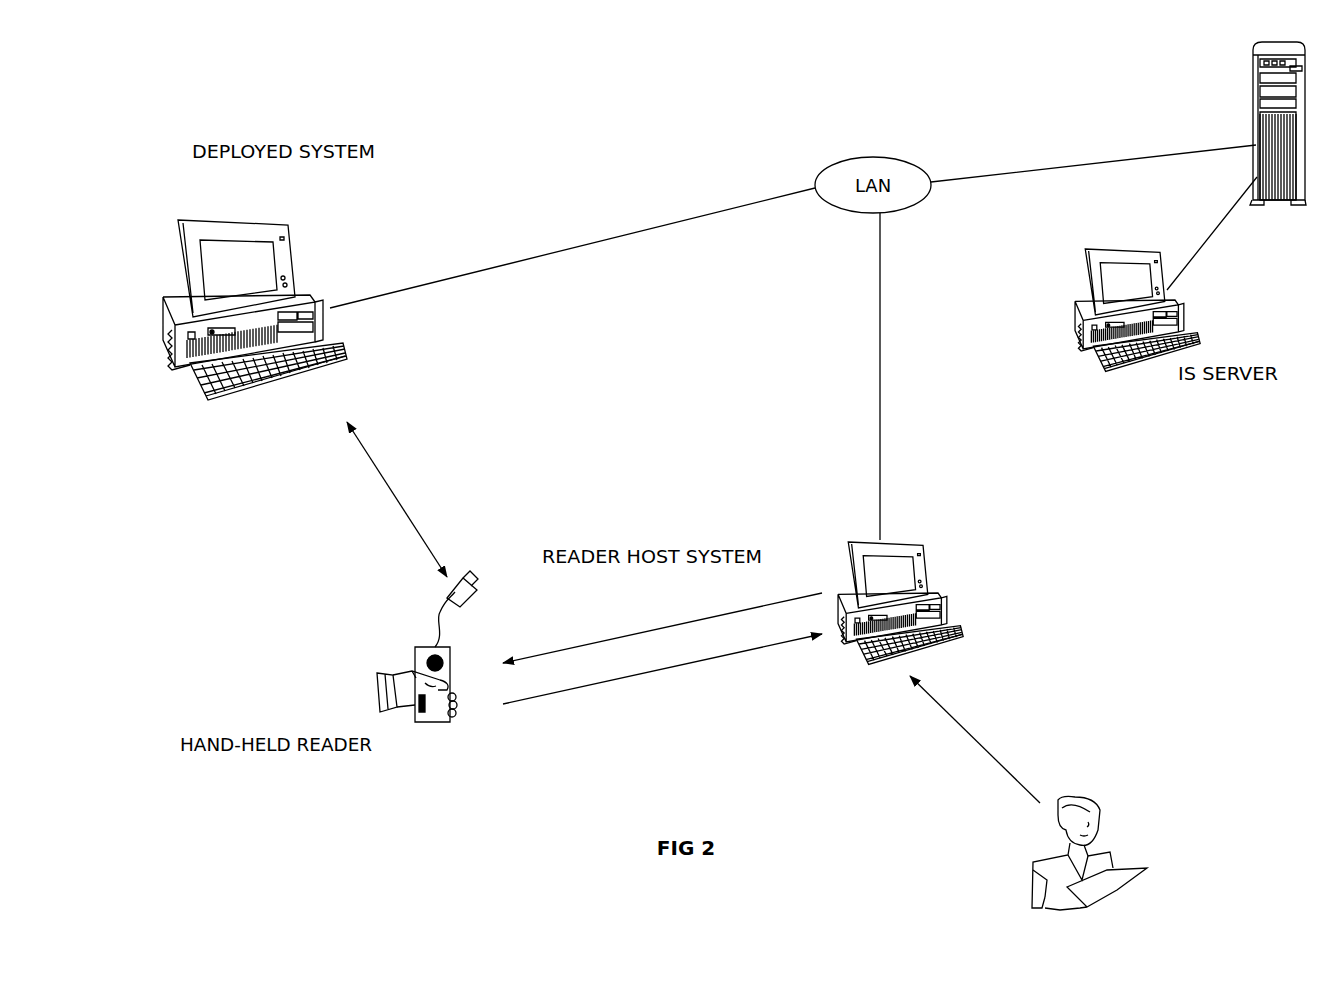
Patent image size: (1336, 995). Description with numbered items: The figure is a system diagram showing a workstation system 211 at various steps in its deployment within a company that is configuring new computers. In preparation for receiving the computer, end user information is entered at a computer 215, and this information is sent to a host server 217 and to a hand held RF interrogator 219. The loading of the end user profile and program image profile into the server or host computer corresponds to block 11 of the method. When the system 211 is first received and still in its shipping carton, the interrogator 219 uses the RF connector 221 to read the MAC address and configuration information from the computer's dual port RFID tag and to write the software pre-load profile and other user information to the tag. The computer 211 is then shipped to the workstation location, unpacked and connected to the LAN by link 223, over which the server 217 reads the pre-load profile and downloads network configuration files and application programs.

The workstation system 211 is at (297, 253).
The link 223 is at (533, 260).
The host server 217 is at (1252, 72).
The RF connector 221 is at (380, 477).
The computer 215 is at (923, 563).
The hand held RF interrogator 219 is at (432, 723).
The block 11 is at (972, 737).